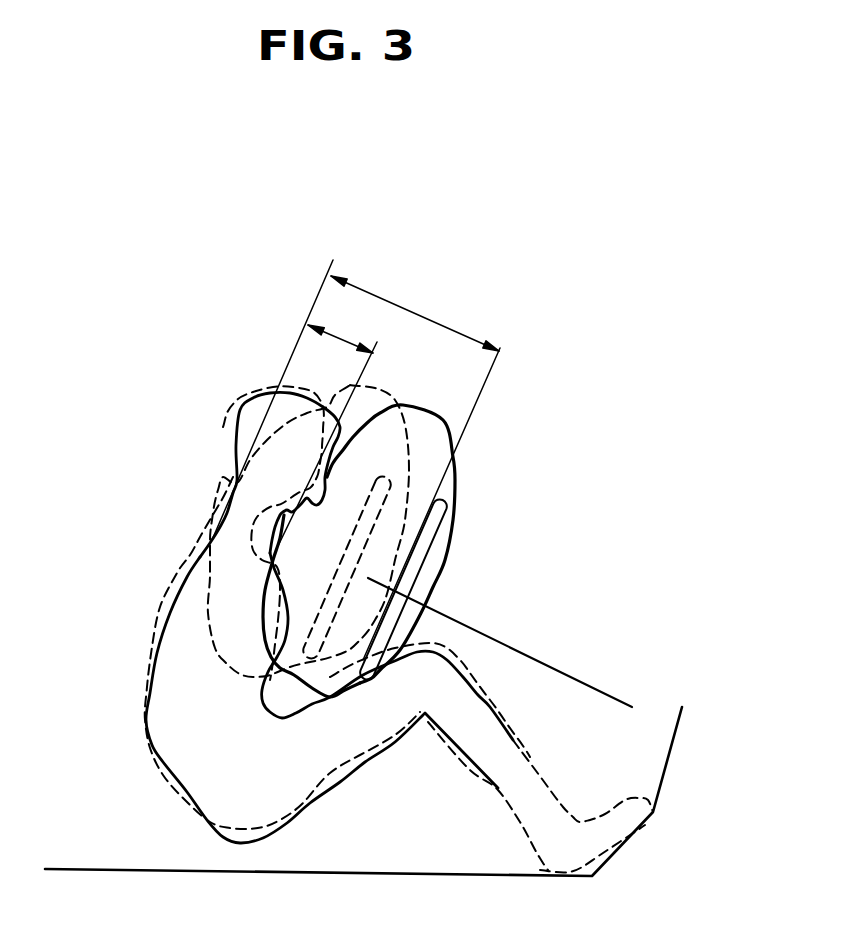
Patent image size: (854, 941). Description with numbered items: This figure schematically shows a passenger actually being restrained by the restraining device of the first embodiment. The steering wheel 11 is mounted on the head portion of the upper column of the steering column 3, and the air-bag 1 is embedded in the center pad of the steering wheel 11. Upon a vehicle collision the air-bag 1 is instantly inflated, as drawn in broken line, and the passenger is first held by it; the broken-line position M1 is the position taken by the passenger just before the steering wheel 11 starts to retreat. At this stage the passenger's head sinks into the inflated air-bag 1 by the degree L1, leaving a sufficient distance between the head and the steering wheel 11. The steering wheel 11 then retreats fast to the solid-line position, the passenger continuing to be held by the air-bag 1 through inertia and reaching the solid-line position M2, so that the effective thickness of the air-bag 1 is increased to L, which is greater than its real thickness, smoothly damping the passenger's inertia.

The air-bag 1 is at (383, 396).
The steering wheel 11 is at (385, 502).
The steering column 3 is at (513, 648).
The position of passenger before retreat M1 is at (243, 393).
The position of passenger after retreat M2 is at (235, 430).
The effective thickness L is at (356, 460).
The degree of head sinking L1 is at (327, 427).